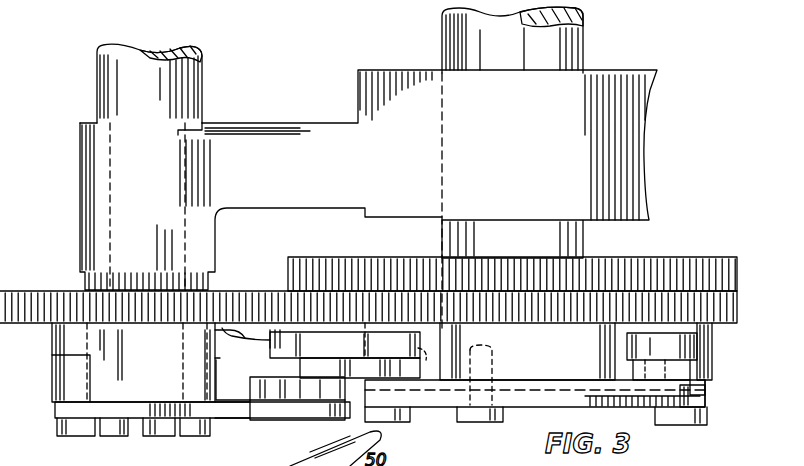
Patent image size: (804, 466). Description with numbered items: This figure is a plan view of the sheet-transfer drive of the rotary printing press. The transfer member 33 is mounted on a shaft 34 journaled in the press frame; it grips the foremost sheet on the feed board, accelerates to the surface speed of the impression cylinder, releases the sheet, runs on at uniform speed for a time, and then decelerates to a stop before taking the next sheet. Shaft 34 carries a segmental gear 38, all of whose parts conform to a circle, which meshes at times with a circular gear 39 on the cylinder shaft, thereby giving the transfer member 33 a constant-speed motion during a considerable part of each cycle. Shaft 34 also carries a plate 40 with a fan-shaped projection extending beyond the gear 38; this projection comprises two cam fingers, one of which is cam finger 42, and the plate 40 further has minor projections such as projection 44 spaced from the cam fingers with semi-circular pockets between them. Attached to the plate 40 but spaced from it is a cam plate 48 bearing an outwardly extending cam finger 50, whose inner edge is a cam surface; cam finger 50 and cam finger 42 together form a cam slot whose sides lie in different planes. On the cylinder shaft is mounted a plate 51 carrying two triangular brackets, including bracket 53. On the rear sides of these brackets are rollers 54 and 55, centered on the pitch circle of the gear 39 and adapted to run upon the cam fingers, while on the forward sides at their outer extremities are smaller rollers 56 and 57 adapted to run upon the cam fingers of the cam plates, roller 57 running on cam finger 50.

The transfer member 33 is at (55, 408).
The shaft 34 is at (190, 103).
The segmental gear 38 is at (48, 290).
The circular gear 39 is at (400, 248).
The plate 40 is at (70, 340).
The cam finger 42 is at (426, 352).
The minor projection 44 is at (300, 345).
The cam plate 48 is at (220, 412).
The cam finger 50 is at (332, 412).
The plate 51 is at (437, 398).
The triangular bracket 53 is at (705, 388).
The roller 54 is at (250, 360).
The roller 55 is at (700, 340).
The smaller roller 56 is at (255, 410).
The smaller roller 57 is at (705, 404).